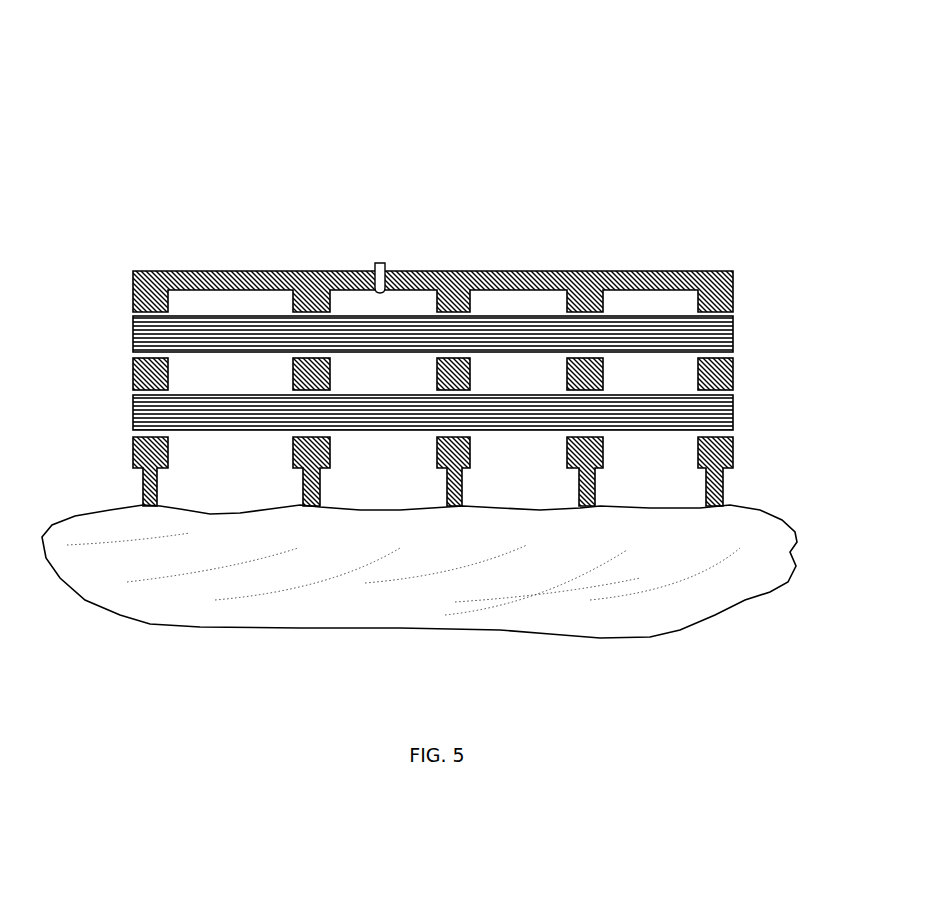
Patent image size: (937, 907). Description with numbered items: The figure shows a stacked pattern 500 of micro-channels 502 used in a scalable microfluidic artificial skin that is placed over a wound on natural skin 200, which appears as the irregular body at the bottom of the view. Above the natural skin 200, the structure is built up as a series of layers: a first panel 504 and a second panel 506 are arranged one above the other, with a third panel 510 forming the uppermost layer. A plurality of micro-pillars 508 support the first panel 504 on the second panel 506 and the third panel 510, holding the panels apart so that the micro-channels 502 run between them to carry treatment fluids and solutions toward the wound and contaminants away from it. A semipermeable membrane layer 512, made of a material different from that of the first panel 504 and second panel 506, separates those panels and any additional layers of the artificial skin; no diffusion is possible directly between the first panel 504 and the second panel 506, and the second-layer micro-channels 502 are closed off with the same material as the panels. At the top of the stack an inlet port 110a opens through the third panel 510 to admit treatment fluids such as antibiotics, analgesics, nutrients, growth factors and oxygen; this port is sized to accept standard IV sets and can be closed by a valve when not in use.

The stacked pattern 500 is at (152, 79).
The natural skin 200 is at (433, 557).
The third panel 510 is at (735, 271).
The inlet port 110a is at (385, 270).
The semipermeable membrane layer 512 is at (735, 327).
The micro-channels 502 is at (158, 316).
The second panel 506 is at (735, 378).
The first panel 504 is at (735, 422).
The micro-pillars 508 is at (132, 465).